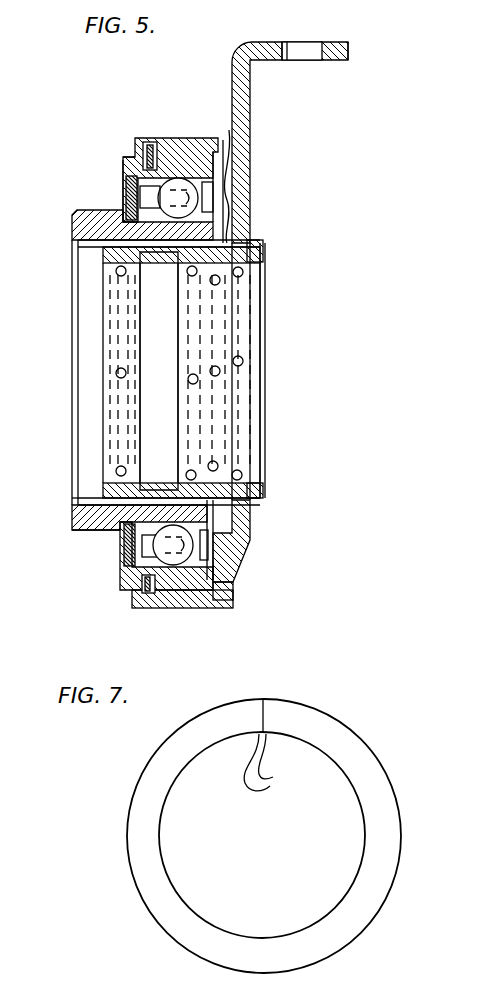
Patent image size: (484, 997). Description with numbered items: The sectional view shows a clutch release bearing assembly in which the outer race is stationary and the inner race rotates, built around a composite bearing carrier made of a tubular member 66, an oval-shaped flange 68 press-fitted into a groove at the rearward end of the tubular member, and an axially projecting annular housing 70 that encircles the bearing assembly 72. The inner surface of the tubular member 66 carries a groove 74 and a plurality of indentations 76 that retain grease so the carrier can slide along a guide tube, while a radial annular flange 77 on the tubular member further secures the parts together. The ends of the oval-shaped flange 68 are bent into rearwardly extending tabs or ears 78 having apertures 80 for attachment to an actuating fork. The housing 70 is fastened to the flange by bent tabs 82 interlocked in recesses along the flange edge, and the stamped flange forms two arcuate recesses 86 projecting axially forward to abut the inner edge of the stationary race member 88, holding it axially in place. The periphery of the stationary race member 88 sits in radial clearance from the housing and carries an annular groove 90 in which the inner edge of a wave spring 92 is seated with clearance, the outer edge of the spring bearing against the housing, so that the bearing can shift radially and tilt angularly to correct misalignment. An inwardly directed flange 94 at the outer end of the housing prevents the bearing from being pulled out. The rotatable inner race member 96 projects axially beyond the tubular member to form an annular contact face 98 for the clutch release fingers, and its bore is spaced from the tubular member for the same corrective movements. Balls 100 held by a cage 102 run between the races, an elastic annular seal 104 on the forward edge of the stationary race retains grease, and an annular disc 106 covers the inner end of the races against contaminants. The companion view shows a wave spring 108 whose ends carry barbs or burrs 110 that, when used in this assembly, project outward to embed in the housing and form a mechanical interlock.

In FIG. 5, the tubular member 66 is at (252, 416).
In FIG. 5, the oval-shaped flange 68 is at (242, 203).
In FIG. 5, the annular housing 70 is at (177, 150).
In FIG. 5, the bearing assembly 72 is at (93, 503).
In FIG. 5, the groove 74 is at (150, 303).
In FIG. 5, the indentations 76 is at (240, 358).
In FIG. 5, the radial annular flange 77 is at (264, 243).
In FIG. 5, the tabs or ears 78 is at (342, 60).
In FIG. 5, the apertures 80 is at (284, 60).
In FIG. 5, the bent tabs 82 is at (231, 588).
In FIG. 5, the arcuate recesses 86 is at (221, 172).
In FIG. 5, the stationary race member 88 is at (123, 157).
In FIG. 5, the annular groove 90 is at (122, 163).
In FIG. 5, the wave spring 92 is at (153, 145).
In FIG. 5, the inwardly directed flange 94 is at (141, 150).
In FIG. 5, the rotatable inner race member 96 is at (90, 530).
In FIG. 5, the annular contact face 98 is at (72, 508).
In FIG. 5, the balls 100 is at (176, 183).
In FIG. 5, the cage 102 is at (127, 555).
In FIG. 5, the elastic annular seal 104 is at (124, 192).
In FIG. 5, the annular disc 106 is at (204, 543).
In FIG. 7, the wave spring 108 is at (355, 758).
In FIG. 7, the barbs or burrs 110 is at (268, 770).